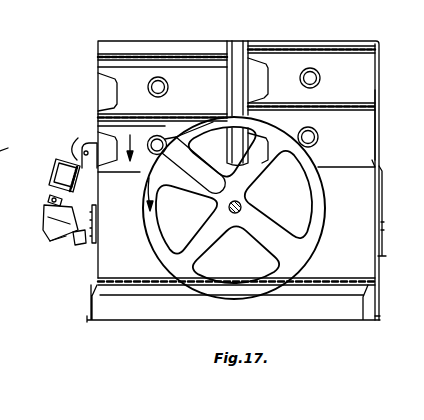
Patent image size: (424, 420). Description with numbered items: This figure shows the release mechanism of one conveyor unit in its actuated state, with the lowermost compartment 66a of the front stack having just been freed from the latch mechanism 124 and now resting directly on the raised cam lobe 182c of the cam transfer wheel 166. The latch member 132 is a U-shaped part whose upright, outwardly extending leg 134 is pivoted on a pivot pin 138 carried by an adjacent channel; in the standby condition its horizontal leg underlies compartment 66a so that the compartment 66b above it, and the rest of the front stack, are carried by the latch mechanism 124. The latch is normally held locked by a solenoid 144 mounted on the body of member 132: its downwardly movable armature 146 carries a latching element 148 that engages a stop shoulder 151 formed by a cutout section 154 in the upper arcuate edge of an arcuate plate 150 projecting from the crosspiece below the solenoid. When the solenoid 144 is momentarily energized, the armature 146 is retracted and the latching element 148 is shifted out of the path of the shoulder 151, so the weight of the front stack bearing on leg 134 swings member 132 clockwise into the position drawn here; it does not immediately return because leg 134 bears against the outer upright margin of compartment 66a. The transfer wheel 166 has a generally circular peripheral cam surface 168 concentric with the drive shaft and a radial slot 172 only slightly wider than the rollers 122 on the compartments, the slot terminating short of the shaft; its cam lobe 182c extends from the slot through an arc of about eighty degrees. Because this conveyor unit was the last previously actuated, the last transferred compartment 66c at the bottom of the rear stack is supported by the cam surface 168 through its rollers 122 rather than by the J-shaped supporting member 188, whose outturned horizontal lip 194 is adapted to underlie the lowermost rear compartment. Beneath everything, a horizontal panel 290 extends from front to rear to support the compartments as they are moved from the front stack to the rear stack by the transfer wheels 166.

The lowermost compartment 66a is at (137, 175).
The compartment 66b is at (99, 83).
The last to be transferred compartment 66c is at (367, 128).
The rollers 122 is at (152, 138).
The latch mechanism 124 is at (62, 159).
The latch member 132 is at (93, 191).
The leg 134 is at (83, 152).
The pivot pins 138 is at (8, 141).
The solenoid 144 is at (52, 176).
The armature 146 is at (50, 198).
The latching element 148 is at (45, 211).
The arcuate plate 150 is at (68, 227).
The stop shoulder 151 is at (49, 218).
The cutout section 154 is at (78, 238).
The cam transfer wheel 166 is at (214, 301).
The peripheral cam surface 168 is at (330, 197).
The radial slot 172 is at (195, 147).
The cam lobe 182c is at (146, 237).
The J-shaped supporting member 188 is at (384, 186).
The lip 194 is at (375, 166).
The horizontal panel 290 is at (312, 283).